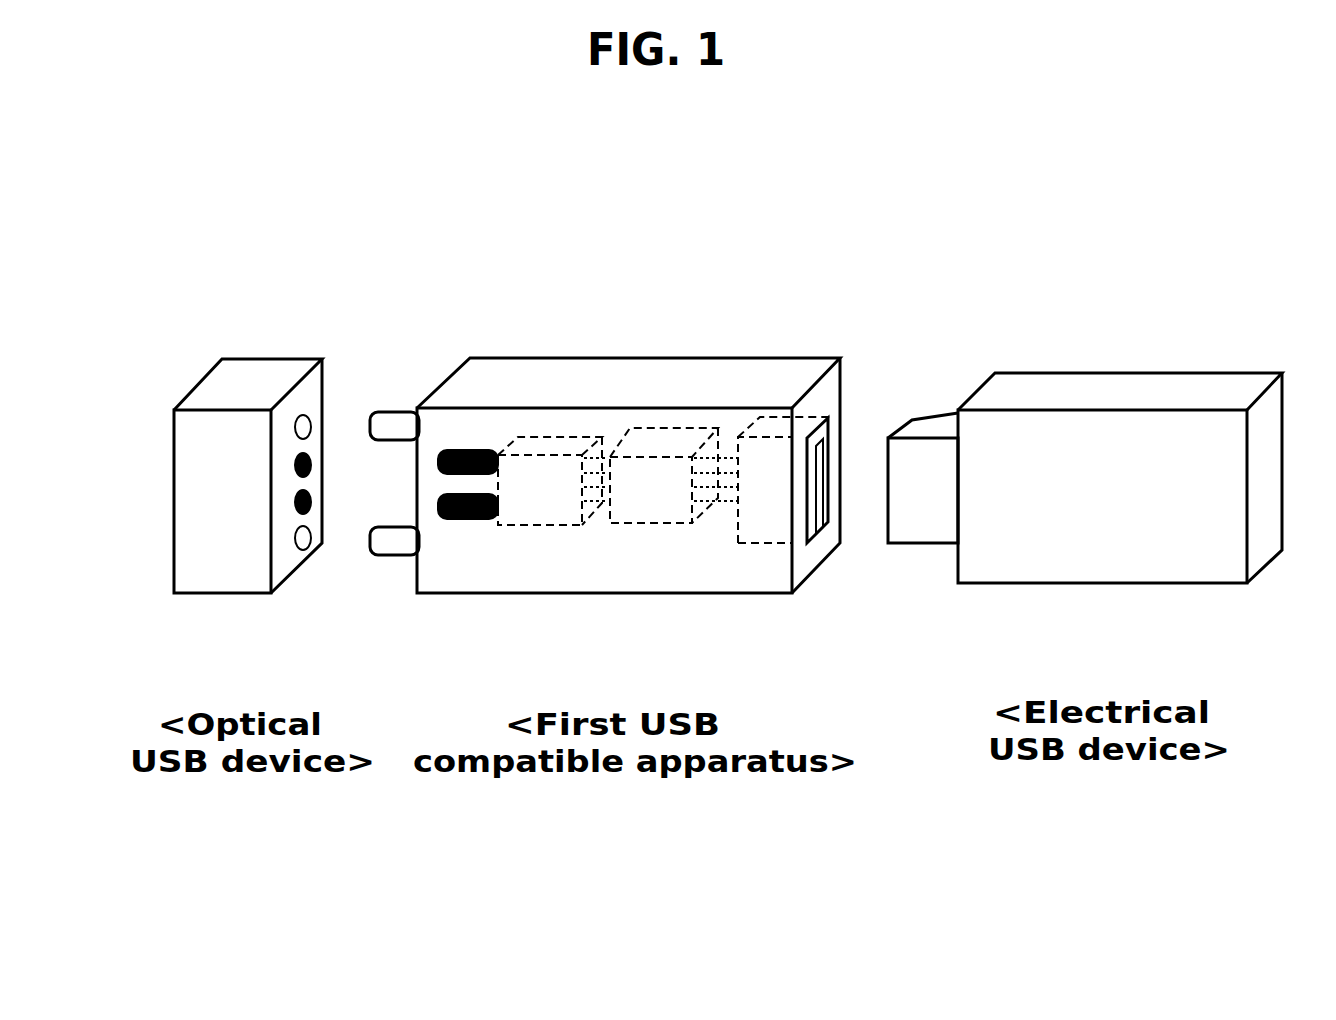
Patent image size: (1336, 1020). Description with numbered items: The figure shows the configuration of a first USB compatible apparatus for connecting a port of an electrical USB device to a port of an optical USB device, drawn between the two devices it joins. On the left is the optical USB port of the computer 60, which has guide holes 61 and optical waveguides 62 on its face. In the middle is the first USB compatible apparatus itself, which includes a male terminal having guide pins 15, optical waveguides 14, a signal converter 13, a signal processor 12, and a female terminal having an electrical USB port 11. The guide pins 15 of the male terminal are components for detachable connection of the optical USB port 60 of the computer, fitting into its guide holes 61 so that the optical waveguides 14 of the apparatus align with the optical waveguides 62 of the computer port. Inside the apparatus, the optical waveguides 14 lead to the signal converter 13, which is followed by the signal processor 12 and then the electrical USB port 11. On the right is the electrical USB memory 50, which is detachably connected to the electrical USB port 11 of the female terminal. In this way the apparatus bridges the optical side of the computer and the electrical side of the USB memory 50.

The optical USB port of the computer 60 is at (233, 372).
The guide holes 61 is at (311, 427).
The optical waveguides 62 is at (312, 468).
The guide pins 15 is at (404, 423).
The optical waveguides 14 is at (472, 520).
The signal converter 13 is at (526, 450).
The signal processor 12 is at (677, 470).
The electrical USB port 11 is at (818, 468).
The electrical USB memory 50 is at (1096, 392).